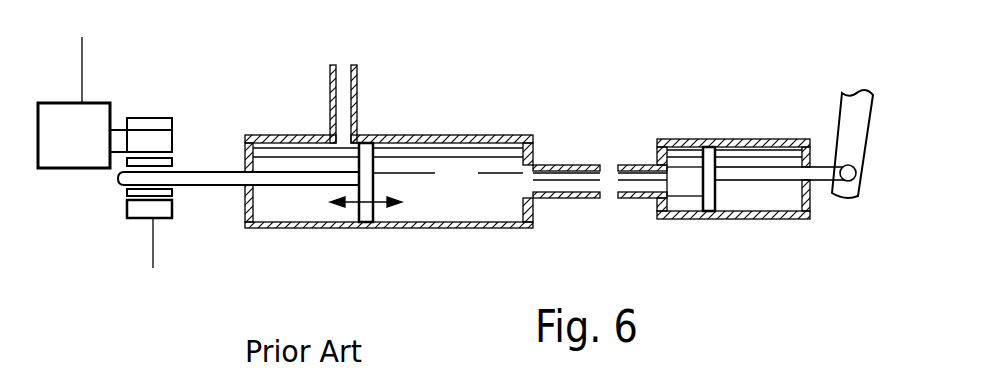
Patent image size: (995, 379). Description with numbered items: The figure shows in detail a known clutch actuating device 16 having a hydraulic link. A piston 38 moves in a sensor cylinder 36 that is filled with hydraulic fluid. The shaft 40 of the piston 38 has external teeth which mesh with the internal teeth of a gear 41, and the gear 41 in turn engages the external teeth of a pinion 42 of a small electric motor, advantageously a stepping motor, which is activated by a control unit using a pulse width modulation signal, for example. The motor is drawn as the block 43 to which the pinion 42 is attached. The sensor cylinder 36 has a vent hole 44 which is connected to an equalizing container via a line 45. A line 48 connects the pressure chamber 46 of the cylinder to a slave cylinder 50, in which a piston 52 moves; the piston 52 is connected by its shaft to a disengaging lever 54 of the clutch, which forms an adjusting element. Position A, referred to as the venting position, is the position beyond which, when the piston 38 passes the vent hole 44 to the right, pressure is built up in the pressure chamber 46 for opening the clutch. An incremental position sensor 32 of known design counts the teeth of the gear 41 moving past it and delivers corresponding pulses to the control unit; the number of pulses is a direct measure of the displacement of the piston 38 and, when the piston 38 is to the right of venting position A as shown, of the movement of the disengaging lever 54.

The actuating device 16 is at (462, 116).
The incremental position sensor 32 is at (137, 210).
The sensor cylinder 36 is at (432, 228).
The piston 38 is at (367, 210).
The shaft 40 is at (218, 185).
The gear 41 is at (173, 167).
The pinion 42 is at (145, 138).
The drive motor housing 43 is at (100, 115).
The vent hole 44 is at (343, 137).
The line 45 is at (345, 78).
The pressure chamber 46 is at (470, 192).
The line 48 is at (578, 167).
The slave cylinder 50 is at (740, 142).
The piston 52 is at (710, 203).
The disengaging lever 54 is at (848, 132).
The venting position A is at (357, 135).